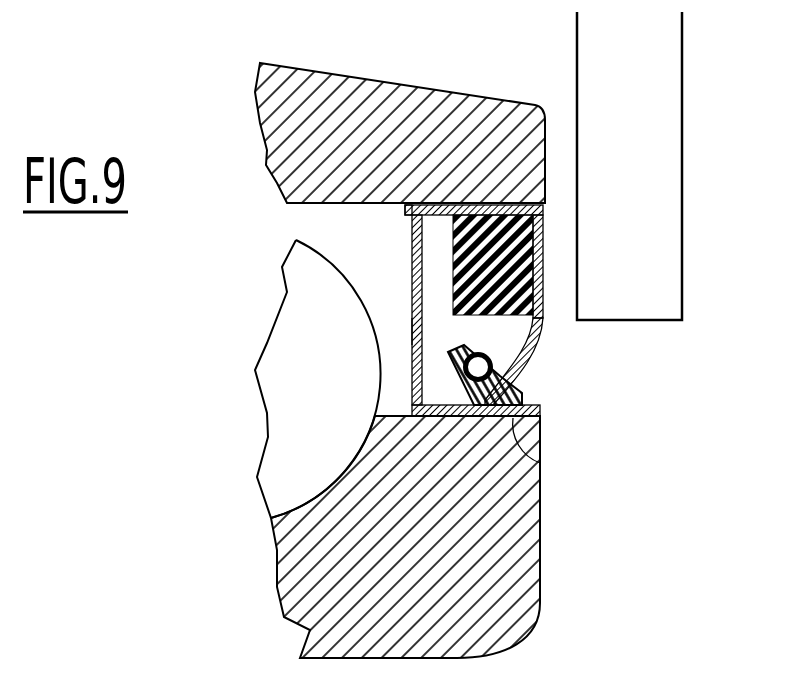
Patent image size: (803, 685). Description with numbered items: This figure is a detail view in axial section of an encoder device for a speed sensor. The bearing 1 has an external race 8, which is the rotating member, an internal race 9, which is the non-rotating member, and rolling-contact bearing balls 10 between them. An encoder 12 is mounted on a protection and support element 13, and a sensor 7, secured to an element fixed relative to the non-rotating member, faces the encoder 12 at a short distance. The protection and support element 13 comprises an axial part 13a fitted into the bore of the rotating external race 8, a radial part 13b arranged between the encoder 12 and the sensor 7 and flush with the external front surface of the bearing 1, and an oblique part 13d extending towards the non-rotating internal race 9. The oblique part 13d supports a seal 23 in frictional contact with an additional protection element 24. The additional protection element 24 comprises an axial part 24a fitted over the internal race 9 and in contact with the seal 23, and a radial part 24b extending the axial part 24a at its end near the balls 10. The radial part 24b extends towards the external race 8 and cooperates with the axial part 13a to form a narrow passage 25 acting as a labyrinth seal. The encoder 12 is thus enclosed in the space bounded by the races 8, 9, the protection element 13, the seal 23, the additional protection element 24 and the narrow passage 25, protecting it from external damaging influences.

The bearing 1 is at (253, 379).
The sensor 7 is at (652, 40).
The external race 8 is at (417, 147).
The internal race 9 is at (454, 537).
The rolling-contact bearing balls 10 is at (292, 470).
The encoder 12 is at (523, 240).
The protection and support element 13 is at (480, 220).
The axial part 13a is at (482, 204).
The radial part 13b is at (541, 283).
The oblique part 13d is at (540, 350).
The seal 23 is at (523, 372).
The additional protection element 24 is at (399, 280).
The axial part 24a is at (540, 465).
The radial part 24b is at (412, 330).
The narrow passage 25 is at (407, 222).